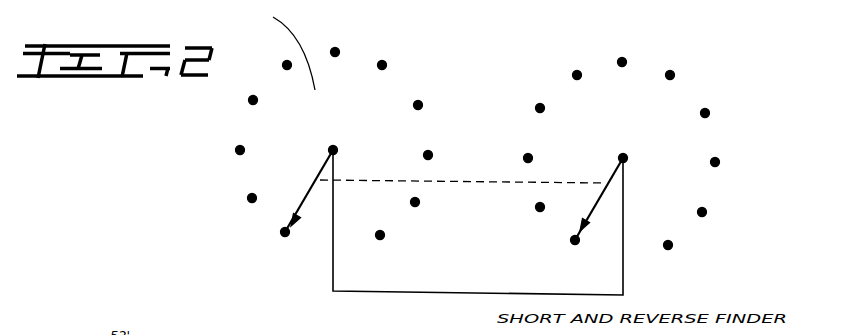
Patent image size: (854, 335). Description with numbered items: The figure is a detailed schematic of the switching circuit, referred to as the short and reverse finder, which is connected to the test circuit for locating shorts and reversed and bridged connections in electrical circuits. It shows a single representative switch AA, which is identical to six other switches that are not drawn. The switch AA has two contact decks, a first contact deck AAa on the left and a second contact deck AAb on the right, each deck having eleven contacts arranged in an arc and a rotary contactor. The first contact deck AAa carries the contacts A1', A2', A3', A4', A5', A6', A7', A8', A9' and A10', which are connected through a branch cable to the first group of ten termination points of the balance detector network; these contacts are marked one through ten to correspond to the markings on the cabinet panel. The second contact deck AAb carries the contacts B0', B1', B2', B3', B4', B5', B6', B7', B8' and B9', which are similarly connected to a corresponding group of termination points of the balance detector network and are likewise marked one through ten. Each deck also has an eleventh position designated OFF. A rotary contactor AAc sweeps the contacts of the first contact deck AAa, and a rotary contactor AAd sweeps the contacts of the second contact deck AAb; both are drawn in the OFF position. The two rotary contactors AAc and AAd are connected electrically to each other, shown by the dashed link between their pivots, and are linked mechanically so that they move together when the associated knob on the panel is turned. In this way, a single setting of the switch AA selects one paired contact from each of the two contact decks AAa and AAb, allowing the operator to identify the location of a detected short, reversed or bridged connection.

The switch AA is at (196, 132).
The first contact deck AAa is at (275, 51).
The second contact deck AAb is at (693, 143).
The rotary contactor AAc is at (314, 187).
The rotary contactor AAd is at (596, 208).
The contact A1' is at (240, 201).
The contact A2' is at (235, 150).
The contact A3' is at (245, 98).
The contact A4' is at (281, 66).
The contact A5' is at (337, 56).
The contact A6' is at (390, 70).
The contact A7' is at (420, 109).
The contact A8' is at (431, 156).
The contact A9' is at (421, 203).
The contact A10' is at (390, 232).
The contact B0' is at (530, 210).
The contact B1' is at (520, 159).
The contact B2' is at (532, 110).
The contact B3' is at (572, 77).
The contact B4' is at (631, 64).
The contact B5' is at (680, 83).
The contact B6' is at (711, 118).
The contact B7' is at (718, 164).
The contact B8' is at (710, 209).
The contact B9' is at (665, 245).